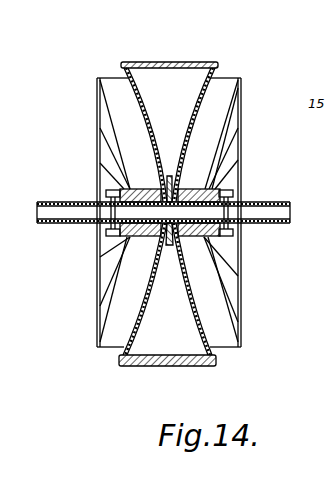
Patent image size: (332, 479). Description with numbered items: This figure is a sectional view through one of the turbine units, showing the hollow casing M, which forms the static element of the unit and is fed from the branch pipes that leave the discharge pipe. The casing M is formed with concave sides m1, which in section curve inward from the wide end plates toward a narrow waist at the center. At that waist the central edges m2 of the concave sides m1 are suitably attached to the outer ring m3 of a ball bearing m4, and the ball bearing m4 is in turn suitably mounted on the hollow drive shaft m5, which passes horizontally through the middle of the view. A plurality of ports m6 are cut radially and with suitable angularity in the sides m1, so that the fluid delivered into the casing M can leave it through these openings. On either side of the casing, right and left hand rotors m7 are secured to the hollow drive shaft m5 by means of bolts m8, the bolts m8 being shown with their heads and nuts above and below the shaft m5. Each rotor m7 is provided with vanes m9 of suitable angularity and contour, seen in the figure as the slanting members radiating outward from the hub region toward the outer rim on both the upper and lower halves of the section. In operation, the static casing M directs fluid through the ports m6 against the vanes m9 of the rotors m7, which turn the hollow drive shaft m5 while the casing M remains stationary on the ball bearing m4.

The hollow casing M is at (186, 62).
The concave sides m1 is at (200, 83).
The central edges m2 is at (163, 188).
The outer ring m3 is at (180, 162).
The ball bearing m4 is at (165, 206).
The hollow drive shaft m5 is at (55, 202).
The ports m6 is at (191, 117).
The right and left hand rotors m7 is at (126, 233).
The bolts m8 is at (104, 212).
The vanes m9 is at (116, 112).